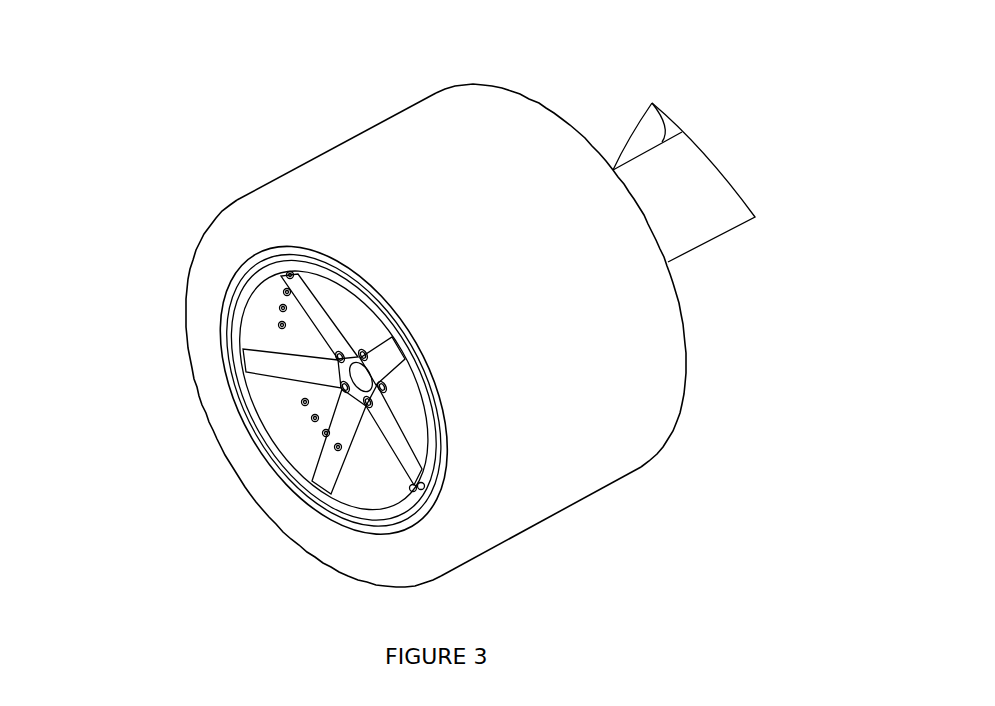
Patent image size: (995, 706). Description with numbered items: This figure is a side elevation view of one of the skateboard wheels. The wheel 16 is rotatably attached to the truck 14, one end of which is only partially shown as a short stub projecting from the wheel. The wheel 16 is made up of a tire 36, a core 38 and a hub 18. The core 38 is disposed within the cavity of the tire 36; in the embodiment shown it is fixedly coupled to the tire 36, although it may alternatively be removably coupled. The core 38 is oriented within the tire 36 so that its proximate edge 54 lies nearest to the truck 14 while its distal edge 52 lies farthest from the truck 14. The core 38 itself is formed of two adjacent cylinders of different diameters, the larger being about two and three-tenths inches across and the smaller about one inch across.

The truck 14 is at (700, 247).
The wheel 16 is at (682, 507).
The hub 18 is at (336, 447).
The tire 36 is at (335, 145).
The core 38 is at (240, 270).
The distal edge 52 is at (203, 387).
The proximate edge 54 is at (558, 118).